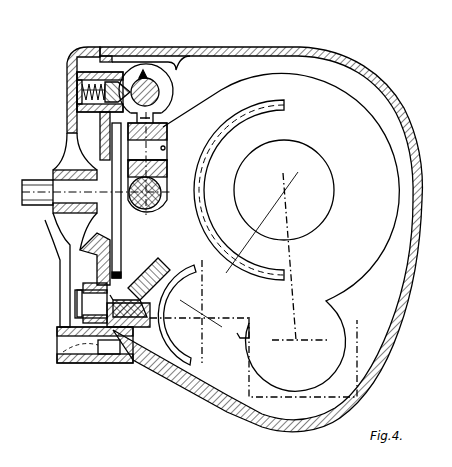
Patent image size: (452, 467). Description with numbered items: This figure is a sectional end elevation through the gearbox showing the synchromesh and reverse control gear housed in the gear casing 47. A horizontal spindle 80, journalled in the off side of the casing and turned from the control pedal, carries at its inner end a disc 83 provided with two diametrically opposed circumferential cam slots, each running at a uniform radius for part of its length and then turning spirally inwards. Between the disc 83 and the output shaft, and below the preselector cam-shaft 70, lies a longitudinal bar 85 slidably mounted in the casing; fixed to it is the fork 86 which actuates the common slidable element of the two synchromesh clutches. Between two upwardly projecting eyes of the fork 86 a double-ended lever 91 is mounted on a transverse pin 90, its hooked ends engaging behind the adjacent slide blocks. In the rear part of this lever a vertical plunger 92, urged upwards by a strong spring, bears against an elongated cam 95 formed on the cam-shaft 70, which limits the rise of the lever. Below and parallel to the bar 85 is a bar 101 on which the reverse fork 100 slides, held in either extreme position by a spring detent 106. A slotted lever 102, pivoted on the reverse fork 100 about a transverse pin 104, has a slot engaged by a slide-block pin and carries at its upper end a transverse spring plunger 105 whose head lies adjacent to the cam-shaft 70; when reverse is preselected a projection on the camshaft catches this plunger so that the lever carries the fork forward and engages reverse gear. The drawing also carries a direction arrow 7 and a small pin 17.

The direction of rotation arrow 7 is at (358, 390).
The pin 17 is at (115, 290).
The gear casing 47 is at (392, 334).
The preselector cam-shaft 70 is at (160, 92).
The horizontal spindle 80 is at (40, 183).
The disc 83 is at (117, 243).
The longitudinal bar 85 is at (130, 208).
The fork 86 is at (286, 104).
The transverse pin 90 is at (128, 150).
The double-ended lever 91 is at (120, 183).
The vertical plunger 92 is at (78, 108).
The elongated cam 95 is at (165, 103).
The reverse fork 100 is at (201, 360).
The bar 101 is at (62, 326).
The slotted lever 102 is at (100, 127).
The transverse pin 104 is at (90, 302).
The transverse spring plunger 105 is at (147, 75).
The spring detent 106 is at (143, 272).